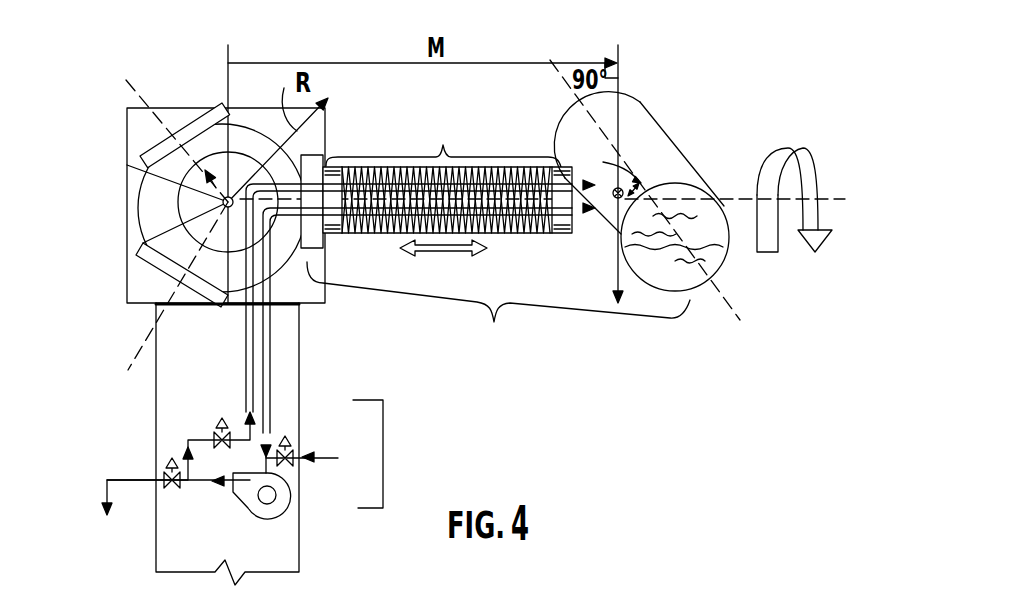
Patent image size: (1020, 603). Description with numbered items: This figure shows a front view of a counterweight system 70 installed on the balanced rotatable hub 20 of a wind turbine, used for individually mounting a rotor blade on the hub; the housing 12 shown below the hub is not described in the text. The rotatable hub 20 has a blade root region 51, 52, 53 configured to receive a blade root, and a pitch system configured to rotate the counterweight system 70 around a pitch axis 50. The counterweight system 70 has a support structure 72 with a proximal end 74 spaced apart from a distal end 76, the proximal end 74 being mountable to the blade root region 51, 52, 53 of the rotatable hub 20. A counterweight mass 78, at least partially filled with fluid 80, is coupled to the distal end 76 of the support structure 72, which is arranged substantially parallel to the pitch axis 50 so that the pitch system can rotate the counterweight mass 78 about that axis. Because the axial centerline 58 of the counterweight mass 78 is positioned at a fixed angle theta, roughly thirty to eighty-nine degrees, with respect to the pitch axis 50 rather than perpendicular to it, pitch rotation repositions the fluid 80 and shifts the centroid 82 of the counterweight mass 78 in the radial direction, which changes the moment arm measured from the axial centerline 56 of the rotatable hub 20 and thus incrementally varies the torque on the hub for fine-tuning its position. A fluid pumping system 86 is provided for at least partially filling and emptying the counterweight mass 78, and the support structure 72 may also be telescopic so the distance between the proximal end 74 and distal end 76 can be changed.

The housing 12 is at (192, 545).
The rotatable hub 20 is at (150, 200).
The pitch axis 50 is at (130, 80).
The blade root region 51 is at (134, 264).
The blade root region 52 is at (213, 113).
The blade root region 53 is at (311, 166).
The axial centerline of the rotatable hub 56 is at (153, 197).
The axial centerline of the counterweight mass 58 is at (546, 56).
The counterweight system 70 is at (498, 309).
The support structure 72 is at (443, 172).
The proximal end 74 is at (309, 252).
The distal end 76 is at (556, 240).
The counterweight mass 78 is at (663, 145).
The fluid 80 is at (700, 250).
The centroid 82 is at (641, 182).
The fluid pumping system 86 is at (387, 455).